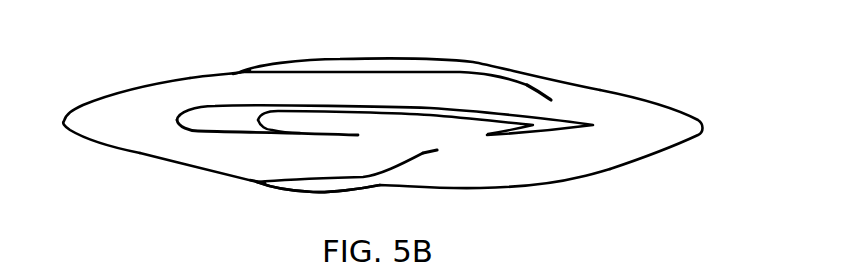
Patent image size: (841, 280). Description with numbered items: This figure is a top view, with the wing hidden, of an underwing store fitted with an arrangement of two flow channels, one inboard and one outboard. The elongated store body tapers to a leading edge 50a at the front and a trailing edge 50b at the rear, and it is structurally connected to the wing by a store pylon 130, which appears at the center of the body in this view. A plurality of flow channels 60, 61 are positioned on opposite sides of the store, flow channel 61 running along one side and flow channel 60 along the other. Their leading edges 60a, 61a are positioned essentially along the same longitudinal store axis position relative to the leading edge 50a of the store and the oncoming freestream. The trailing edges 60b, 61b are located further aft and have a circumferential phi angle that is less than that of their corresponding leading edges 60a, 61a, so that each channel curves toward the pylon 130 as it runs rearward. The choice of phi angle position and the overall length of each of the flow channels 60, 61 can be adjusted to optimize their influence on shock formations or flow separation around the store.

The leading edge of store 50a is at (63, 124).
The trailing edge of store 50b is at (704, 129).
The flow channel 61 is at (401, 57).
The leading edge of flow channel 61a is at (241, 72).
The trailing edge of flow channel 61b is at (551, 98).
The flow channel 60 is at (346, 193).
The leading edge of flow channel 60a is at (257, 182).
The trailing edge of flow channel 60b is at (438, 150).
The store pylon 130 is at (297, 123).